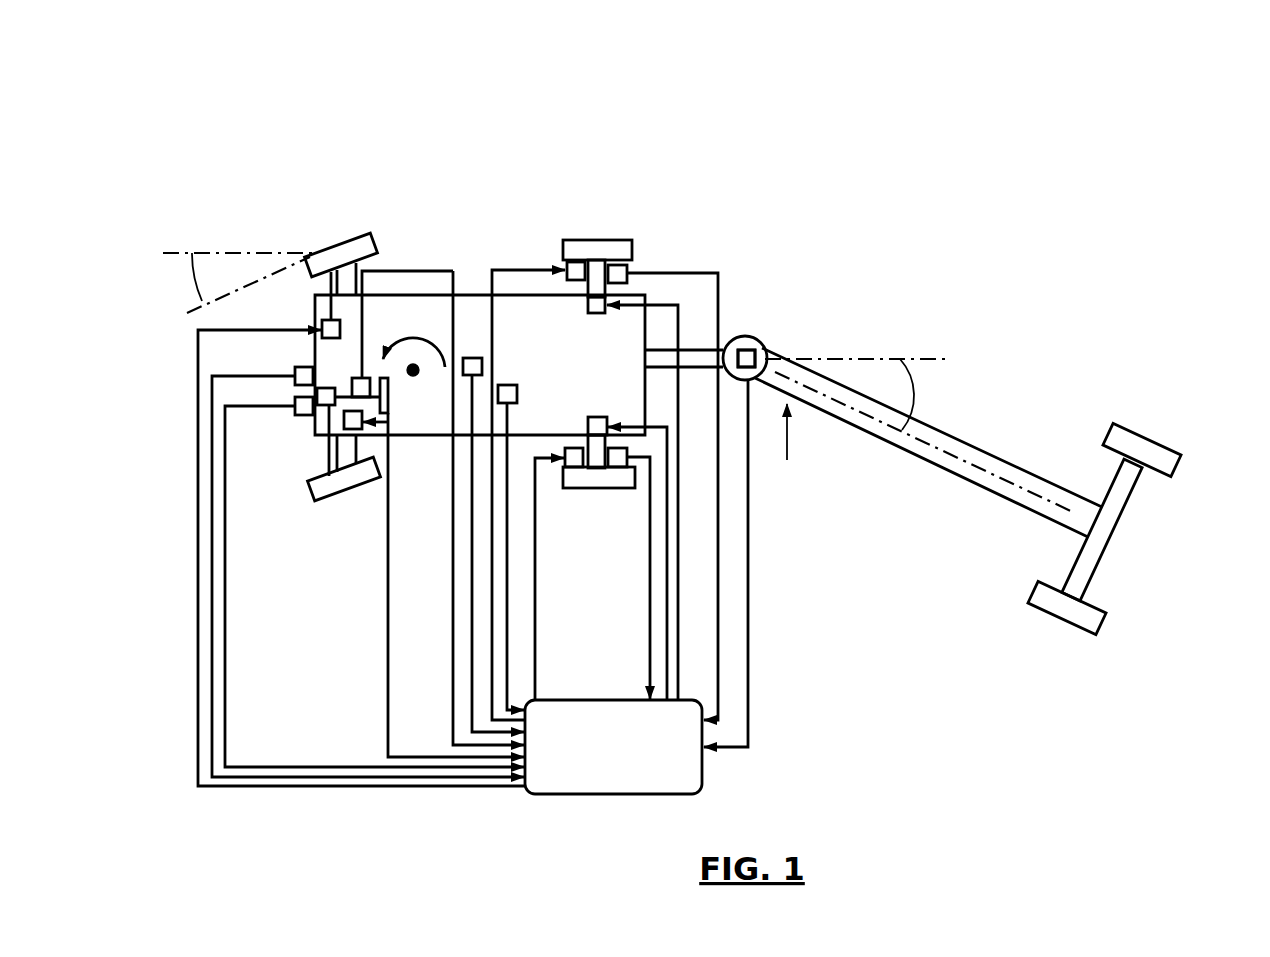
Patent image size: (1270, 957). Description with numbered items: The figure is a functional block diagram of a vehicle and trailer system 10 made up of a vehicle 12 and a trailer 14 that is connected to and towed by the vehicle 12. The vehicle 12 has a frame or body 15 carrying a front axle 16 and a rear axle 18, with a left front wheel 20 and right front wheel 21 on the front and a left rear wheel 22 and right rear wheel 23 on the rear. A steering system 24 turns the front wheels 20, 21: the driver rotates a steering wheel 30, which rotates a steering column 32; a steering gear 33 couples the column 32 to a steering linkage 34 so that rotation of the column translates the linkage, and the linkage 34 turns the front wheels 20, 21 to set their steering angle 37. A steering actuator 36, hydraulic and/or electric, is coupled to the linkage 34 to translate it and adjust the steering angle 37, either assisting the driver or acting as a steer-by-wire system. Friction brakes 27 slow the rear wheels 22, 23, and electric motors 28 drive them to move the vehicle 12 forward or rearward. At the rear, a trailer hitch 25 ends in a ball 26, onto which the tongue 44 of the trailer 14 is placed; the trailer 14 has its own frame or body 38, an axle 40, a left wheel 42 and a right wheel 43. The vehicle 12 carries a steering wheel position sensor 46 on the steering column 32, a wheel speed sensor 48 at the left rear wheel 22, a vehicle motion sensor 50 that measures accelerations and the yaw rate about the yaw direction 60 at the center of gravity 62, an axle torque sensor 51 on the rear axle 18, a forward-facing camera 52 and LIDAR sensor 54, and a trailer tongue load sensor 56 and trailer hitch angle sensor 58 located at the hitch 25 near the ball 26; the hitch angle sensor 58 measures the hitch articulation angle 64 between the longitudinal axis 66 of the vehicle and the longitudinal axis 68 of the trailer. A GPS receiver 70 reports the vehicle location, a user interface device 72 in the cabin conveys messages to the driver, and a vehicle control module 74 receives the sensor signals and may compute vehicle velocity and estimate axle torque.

The vehicle and trailer system 10 is at (228, 65).
The vehicle 12 is at (260, 178).
The trailer 14 is at (1108, 287).
The frame or body 15 is at (473, 293).
The front axle 16 is at (364, 266).
The rear axle 18 is at (607, 290).
The left front wheel 20 is at (348, 493).
The right front wheel 21 is at (328, 247).
The left rear wheel 22 is at (583, 490).
The right rear wheel 23 is at (612, 248).
The steering system 24 is at (302, 433).
The trailer hitch 25 is at (685, 350).
The ball 26 is at (748, 337).
The friction brakes 27 is at (577, 280).
The electric motors 28 is at (588, 307).
The steering wheel 30 is at (388, 418).
The steering column 32 is at (347, 396).
The steering gear 33 is at (325, 396).
The steering linkage 34 is at (328, 289).
The steering actuator 36 is at (321, 329).
The steering angle 37 is at (232, 283).
The frame or body 38 is at (930, 473).
The axle 40 is at (1122, 459).
The left wheel 42 is at (1050, 610).
The right wheel 43 is at (1133, 430).
The tongue 44 is at (773, 439).
The steering wheel position sensor 46 is at (362, 385).
The wheel speed sensor 48 is at (620, 460).
The vehicle motion sensor 50 is at (483, 366).
The axle torque sensor 51 is at (627, 272).
The camera 52 is at (295, 373).
The LIDAR sensor 54 is at (295, 409).
The trailer tongue load sensor 56 is at (752, 358).
The trailer hitch angle sensor 58 is at (746, 358).
The yaw direction 60 is at (410, 333).
The center of gravity 62 is at (421, 375).
The hitch articulation angle 64 is at (925, 394).
The longitudinal axis 66 is at (892, 357).
The longitudinal axis 68 is at (905, 430).
The GPS receiver 70 is at (517, 387).
The user interface device 72 is at (357, 421).
The vehicle control module 74 is at (585, 699).